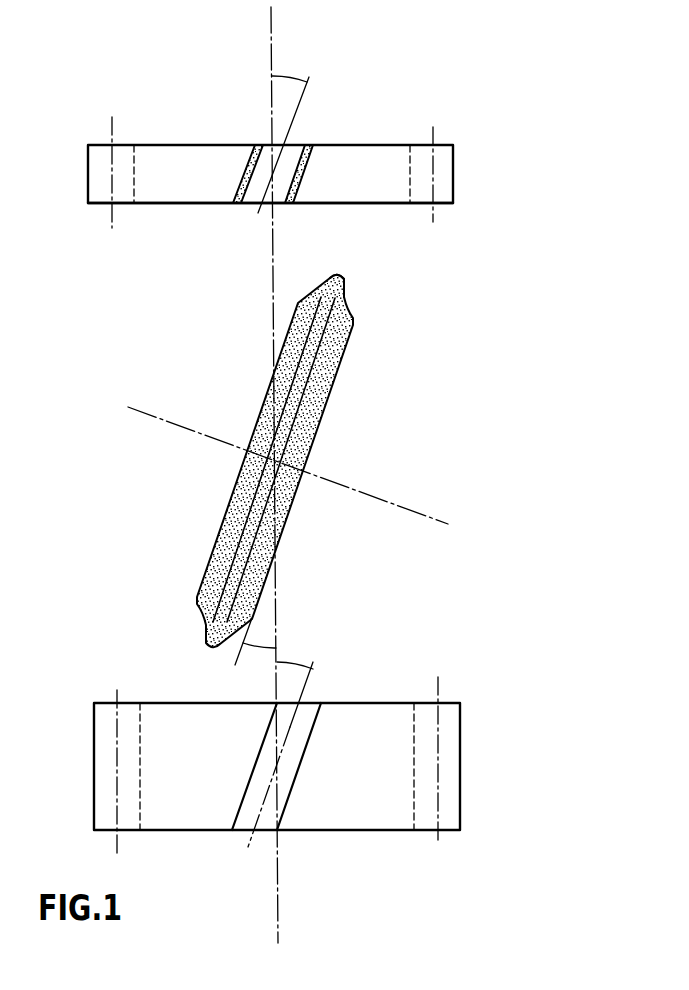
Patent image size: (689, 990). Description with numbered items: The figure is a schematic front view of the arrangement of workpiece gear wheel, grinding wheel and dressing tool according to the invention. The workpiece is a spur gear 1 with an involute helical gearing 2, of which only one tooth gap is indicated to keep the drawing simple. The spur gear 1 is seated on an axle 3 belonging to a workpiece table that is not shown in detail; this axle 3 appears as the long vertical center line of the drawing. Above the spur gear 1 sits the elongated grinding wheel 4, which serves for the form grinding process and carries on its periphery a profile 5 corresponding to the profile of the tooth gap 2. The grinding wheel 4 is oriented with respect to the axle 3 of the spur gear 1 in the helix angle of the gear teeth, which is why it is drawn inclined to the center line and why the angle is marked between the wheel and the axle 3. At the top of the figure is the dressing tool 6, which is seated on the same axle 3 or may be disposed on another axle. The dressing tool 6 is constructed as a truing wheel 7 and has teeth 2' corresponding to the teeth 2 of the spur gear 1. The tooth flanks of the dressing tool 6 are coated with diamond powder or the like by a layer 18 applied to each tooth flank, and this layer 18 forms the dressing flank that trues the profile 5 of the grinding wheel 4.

The spur gear 1 is at (378, 703).
The involute helical gearing 2 is at (300, 794).
The teeth 2' is at (319, 201).
The axle 3 is at (278, 897).
The grinding wheel 4 is at (343, 358).
The profile 5 is at (353, 307).
The dressing tool 6 is at (392, 142).
The truing wheel 7 is at (393, 203).
The layer 18 is at (241, 178).